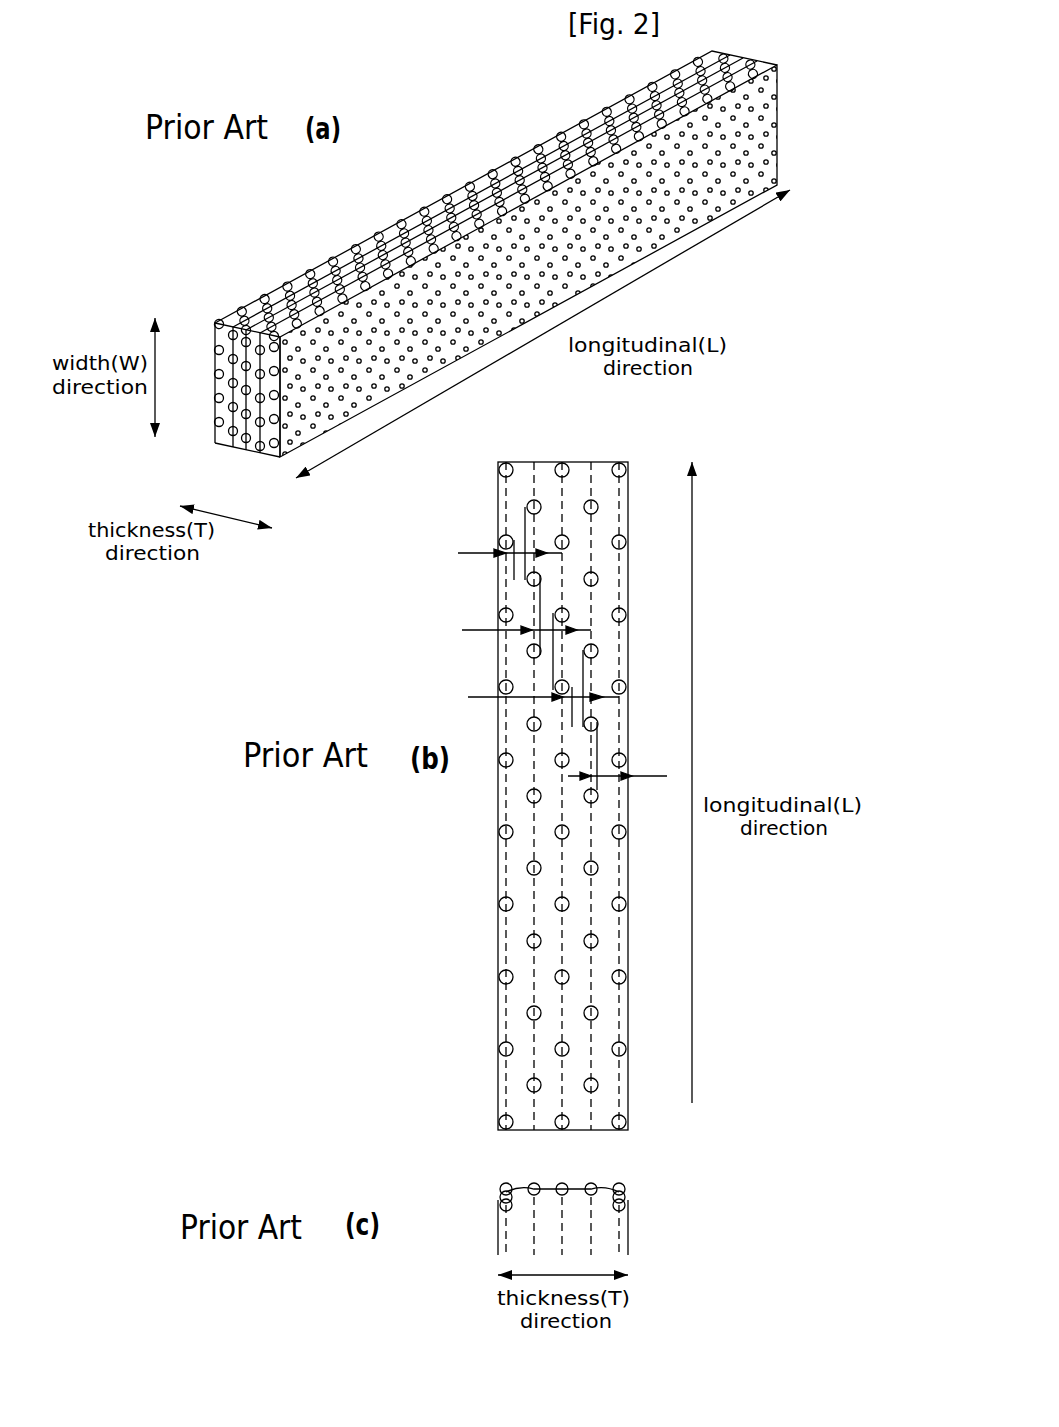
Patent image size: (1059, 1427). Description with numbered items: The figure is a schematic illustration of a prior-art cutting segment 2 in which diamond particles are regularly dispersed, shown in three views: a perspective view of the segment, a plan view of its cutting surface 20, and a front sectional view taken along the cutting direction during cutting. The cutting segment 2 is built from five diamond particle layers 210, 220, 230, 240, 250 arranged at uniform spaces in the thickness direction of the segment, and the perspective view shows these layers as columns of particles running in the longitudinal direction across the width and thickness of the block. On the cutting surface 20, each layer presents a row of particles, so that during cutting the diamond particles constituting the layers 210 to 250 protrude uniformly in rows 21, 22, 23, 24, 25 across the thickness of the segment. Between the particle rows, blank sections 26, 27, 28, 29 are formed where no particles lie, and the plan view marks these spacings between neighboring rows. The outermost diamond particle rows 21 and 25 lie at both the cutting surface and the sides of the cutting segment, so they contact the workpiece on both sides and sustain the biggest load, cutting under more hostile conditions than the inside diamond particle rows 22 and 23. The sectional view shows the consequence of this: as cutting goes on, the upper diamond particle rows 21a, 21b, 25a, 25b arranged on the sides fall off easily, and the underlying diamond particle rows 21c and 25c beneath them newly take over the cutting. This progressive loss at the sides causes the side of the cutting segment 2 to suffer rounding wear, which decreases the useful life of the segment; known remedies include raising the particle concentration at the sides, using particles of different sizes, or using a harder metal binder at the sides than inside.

The cutting segment 2 is at (442, 140).
The cutting surface 20 is at (746, 65).
The diamond particle row 21 is at (232, 313).
The inside diamond particle row 22 is at (252, 315).
The inside diamond particle row 23 is at (278, 317).
The diamond particle row 24 is at (217, 327).
The diamond particle row 25 is at (297, 321).
The blank section 26 is at (508, 543).
The blank section 27 is at (526, 632).
The blank section 28 is at (542, 688).
The blank section 29 is at (617, 756).
The diamond particle layer 210 is at (213, 362).
The diamond particle layer 220 is at (228, 427).
The diamond particle layer 230 is at (243, 432).
The diamond particle layer 240 is at (263, 435).
The diamond particle layer 250 is at (280, 408).
The upper diamond particle row 21a is at (503, 1184).
The upper diamond particle row 21b is at (500, 1195).
The underlying diamond particle row 21c is at (500, 1206).
The upper diamond particle row 25a is at (622, 1184).
The upper diamond particle row 25b is at (625, 1196).
The underlying diamond particle row 25c is at (625, 1207).